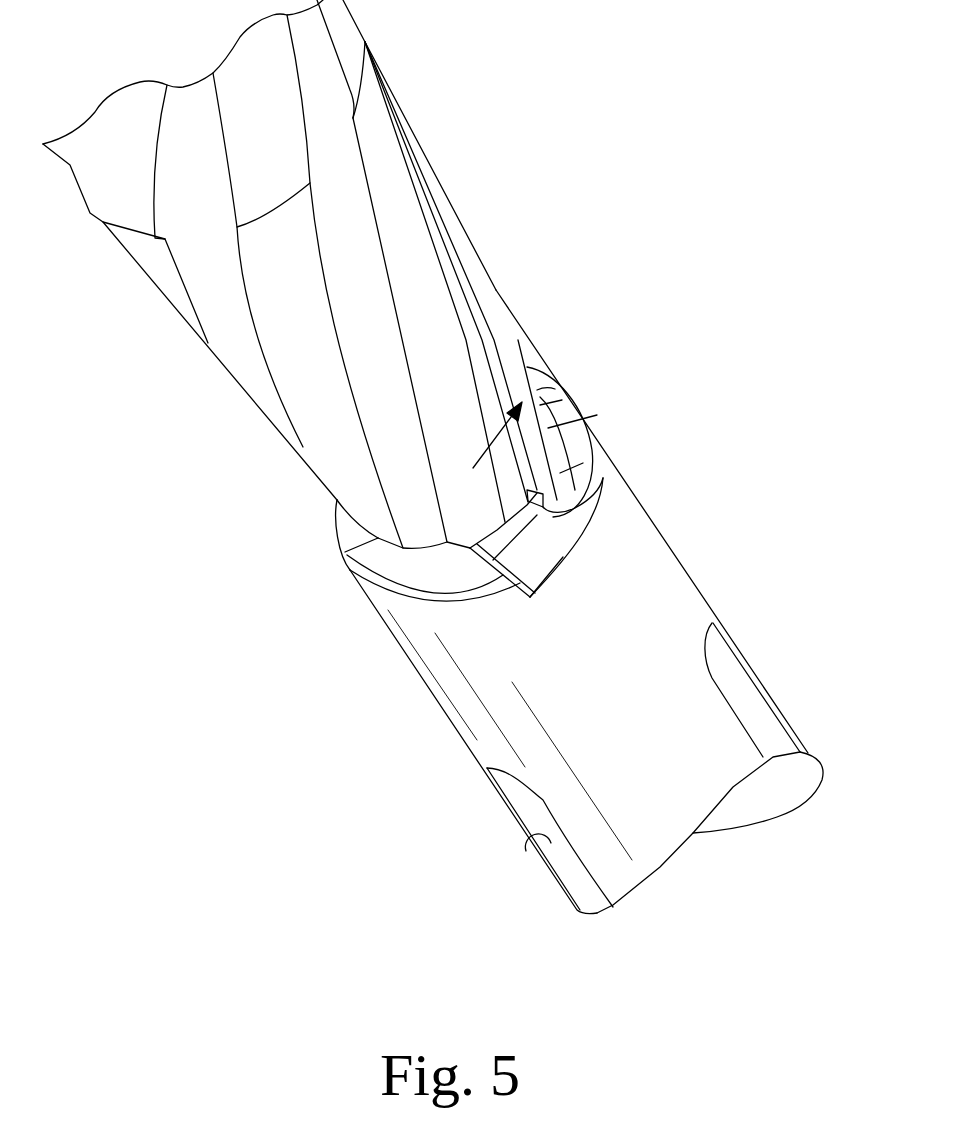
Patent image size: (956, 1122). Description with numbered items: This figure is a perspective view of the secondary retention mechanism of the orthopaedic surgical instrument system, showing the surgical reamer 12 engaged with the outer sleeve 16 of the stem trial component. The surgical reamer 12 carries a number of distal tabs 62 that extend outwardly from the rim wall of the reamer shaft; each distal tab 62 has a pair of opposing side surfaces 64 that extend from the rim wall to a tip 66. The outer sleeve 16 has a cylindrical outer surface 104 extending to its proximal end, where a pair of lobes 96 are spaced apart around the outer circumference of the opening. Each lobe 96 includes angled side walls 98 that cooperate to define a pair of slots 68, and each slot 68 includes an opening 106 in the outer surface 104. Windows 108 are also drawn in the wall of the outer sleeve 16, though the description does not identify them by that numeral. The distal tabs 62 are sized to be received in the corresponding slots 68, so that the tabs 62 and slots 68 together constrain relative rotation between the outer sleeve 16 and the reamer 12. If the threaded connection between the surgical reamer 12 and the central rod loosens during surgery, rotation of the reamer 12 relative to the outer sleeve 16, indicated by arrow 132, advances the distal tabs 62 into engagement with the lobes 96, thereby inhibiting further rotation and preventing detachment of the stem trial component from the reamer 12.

The surgical reamer 12 is at (437, 233).
The outer sleeve 16 is at (663, 567).
The distal tab 62 is at (558, 443).
The side surface 64 is at (600, 480).
The tip 66 is at (560, 473).
The slot 68 is at (546, 581).
The lobe 96 is at (530, 368).
The angled side wall 98 is at (563, 417).
The cylindrical outer surface 104 is at (698, 613).
The opening 106 is at (580, 557).
The window 108 is at (757, 708).
The arrow 132 is at (510, 422).